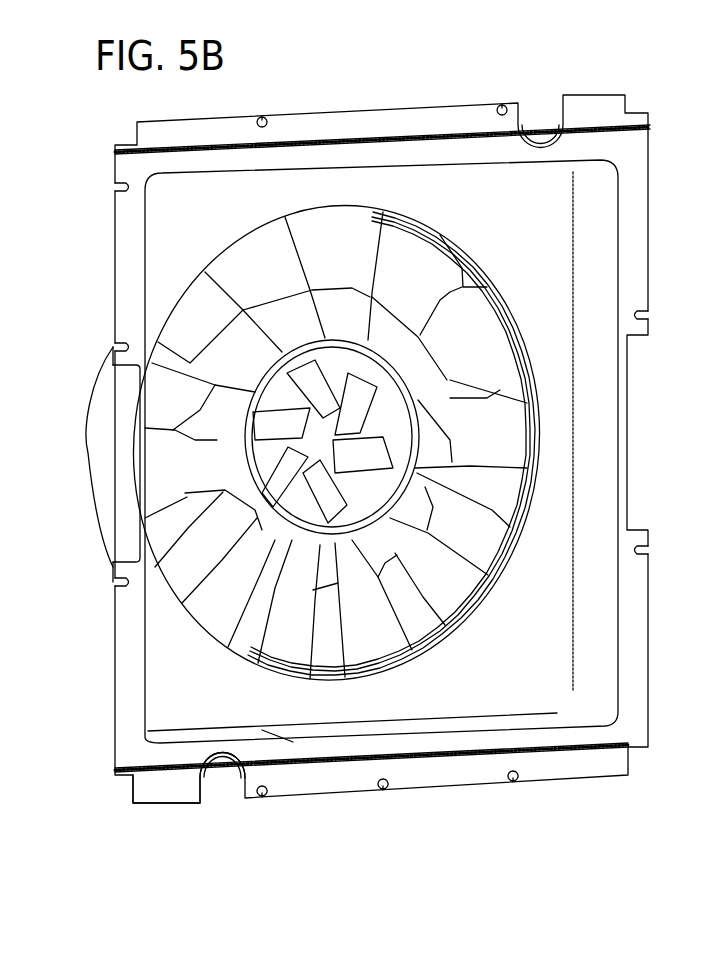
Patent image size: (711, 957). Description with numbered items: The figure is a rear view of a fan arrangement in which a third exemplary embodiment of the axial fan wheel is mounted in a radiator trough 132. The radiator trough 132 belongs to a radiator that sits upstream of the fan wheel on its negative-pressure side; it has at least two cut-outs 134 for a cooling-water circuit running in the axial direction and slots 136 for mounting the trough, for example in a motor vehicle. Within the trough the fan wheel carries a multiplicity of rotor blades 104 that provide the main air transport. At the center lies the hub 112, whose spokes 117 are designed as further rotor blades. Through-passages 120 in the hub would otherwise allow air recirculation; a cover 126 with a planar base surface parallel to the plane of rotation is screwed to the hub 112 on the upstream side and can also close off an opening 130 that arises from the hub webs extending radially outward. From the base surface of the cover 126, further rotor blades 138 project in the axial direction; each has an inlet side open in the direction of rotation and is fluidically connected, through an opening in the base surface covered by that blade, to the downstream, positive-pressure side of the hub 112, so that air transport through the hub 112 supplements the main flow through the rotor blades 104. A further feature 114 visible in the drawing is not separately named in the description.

The rotor blades 104 is at (342, 262).
The hub 112 is at (60, 457).
The rib 114 is at (0, 501).
The spokes 117 is at (60, 464).
The through-passages 120 is at (0, 625).
The cover 126 is at (332, 366).
The opening 130 is at (0, 663).
The radiator trough 132 is at (130, 238).
The cut-outs 134 is at (220, 757).
The slots 136 is at (128, 347).
The further rotor blades 138 is at (357, 402).